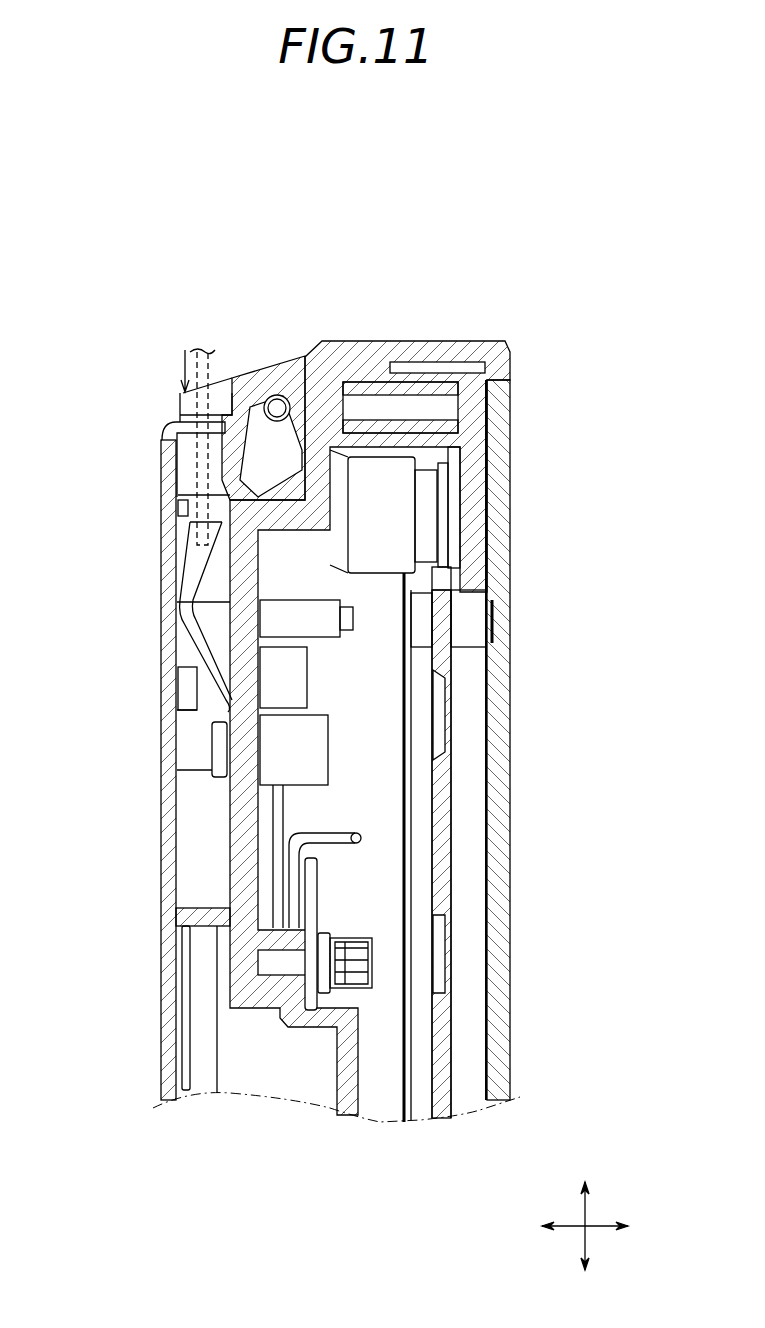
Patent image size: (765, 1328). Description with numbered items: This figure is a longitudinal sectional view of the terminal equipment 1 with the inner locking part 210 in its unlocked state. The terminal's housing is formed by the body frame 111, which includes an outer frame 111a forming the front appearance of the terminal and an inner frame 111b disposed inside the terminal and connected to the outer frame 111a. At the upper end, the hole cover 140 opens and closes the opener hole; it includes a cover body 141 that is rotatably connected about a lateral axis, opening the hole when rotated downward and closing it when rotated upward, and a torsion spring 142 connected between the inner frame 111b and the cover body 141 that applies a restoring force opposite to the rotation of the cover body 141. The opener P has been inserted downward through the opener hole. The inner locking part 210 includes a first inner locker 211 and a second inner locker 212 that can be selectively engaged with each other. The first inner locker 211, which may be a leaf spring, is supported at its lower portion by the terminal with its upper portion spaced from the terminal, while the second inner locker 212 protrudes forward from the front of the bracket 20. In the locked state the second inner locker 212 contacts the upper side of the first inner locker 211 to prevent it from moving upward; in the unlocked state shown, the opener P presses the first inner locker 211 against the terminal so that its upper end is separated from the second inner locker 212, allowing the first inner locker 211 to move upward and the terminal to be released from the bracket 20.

The terminal equipment 1 is at (347, 203).
The bracket 20 is at (170, 794).
The body frame 111 is at (388, 285).
The outer frame 111a is at (503, 377).
The inner frame 111b is at (335, 352).
The hole cover 140 is at (287, 302).
The cover body 141 is at (246, 392).
The torsion spring 142 is at (258, 395).
The inner locking part 210 is at (100, 495).
The first inner locker 211 is at (192, 540).
The second inner locker 212 is at (178, 510).
The opener P is at (186, 405).